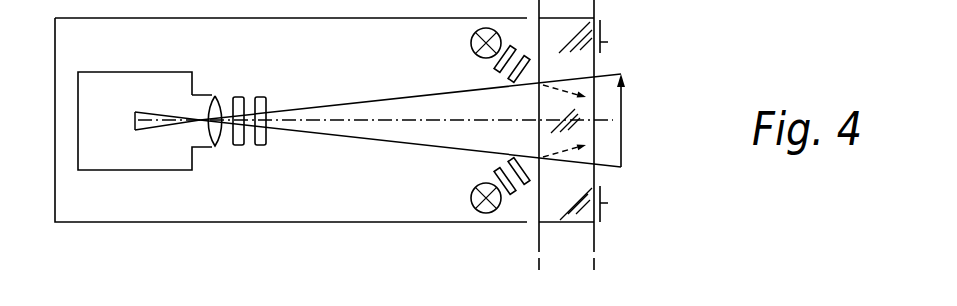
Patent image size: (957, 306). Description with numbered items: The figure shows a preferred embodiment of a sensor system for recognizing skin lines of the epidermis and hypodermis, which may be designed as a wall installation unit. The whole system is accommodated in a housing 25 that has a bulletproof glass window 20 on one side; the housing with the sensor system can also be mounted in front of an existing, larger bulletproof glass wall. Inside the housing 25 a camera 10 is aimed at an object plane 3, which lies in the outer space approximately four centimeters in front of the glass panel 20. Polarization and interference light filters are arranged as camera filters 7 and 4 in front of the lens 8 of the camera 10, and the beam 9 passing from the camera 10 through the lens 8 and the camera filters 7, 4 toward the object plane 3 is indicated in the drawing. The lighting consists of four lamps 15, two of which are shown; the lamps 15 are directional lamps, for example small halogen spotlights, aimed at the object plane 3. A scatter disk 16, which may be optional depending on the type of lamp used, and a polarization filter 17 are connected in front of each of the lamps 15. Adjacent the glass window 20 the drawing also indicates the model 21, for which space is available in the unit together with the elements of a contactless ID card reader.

The object plane 3 is at (622, 138).
The camera filter 4 is at (261, 97).
The camera filter 7 is at (239, 97).
The lens 8 is at (215, 95).
The laser beam 9 is at (132, 123).
The camera 10 is at (138, 171).
The lamp 15 is at (471, 43).
The scatter disk 16 is at (494, 72).
The polarization filter 17 is at (511, 162).
The bulletproof glass window 20 is at (572, 222).
The model 21 is at (608, 42).
The housing 25 is at (208, 222).